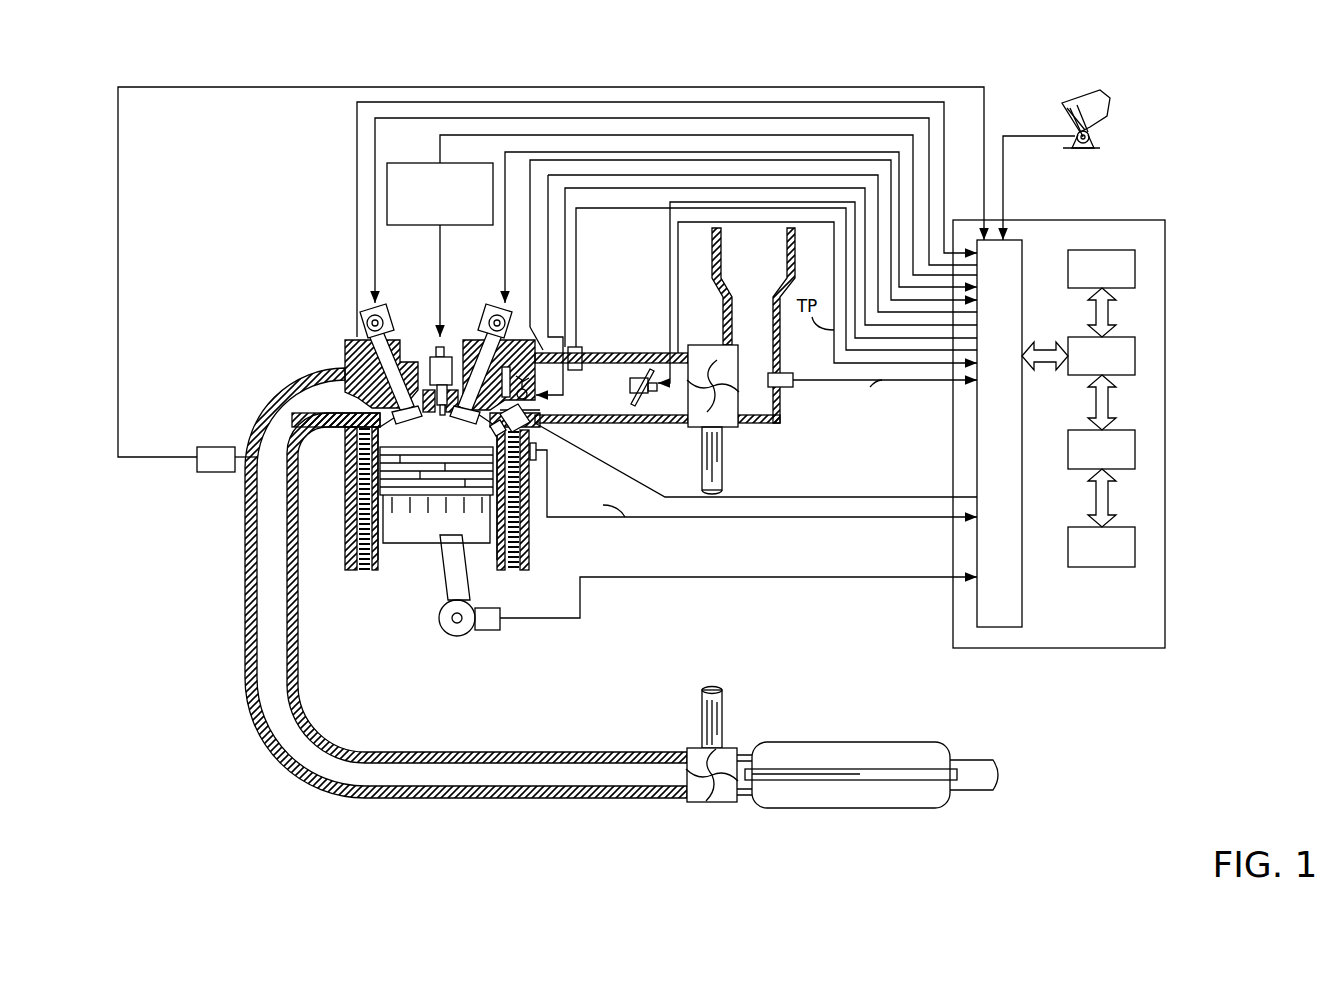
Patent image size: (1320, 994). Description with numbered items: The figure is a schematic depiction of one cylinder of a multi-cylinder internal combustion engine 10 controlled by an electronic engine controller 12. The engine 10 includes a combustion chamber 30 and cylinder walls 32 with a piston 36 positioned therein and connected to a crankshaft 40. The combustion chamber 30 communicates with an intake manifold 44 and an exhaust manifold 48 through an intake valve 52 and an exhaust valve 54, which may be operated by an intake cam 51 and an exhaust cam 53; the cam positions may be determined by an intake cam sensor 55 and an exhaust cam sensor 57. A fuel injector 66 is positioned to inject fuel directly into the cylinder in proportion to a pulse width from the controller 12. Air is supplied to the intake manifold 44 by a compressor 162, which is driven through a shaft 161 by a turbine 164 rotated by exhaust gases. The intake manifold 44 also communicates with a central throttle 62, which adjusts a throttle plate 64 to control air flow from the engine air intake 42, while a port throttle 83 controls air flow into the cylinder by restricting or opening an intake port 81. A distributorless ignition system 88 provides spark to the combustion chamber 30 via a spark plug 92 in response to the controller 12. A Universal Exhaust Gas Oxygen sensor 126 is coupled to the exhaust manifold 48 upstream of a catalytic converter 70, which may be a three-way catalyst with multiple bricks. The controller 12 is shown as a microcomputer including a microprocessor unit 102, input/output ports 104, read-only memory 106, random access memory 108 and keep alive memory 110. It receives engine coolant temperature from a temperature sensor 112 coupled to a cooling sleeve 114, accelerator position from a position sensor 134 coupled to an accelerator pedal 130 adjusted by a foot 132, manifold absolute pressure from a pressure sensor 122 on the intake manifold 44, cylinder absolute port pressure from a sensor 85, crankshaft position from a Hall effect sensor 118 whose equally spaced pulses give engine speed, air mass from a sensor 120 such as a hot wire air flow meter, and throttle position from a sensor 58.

The internal combustion engine 10 is at (285, 292).
The electronic engine controller 12 is at (1102, 419).
The combustion chamber 30 is at (368, 522).
The cylinder walls 32 is at (380, 575).
The piston 36 is at (440, 580).
The crankshaft 40 is at (445, 632).
The engine air intake 42 is at (753, 325).
The intake manifold 44 is at (611, 370).
The exhaust manifold 48 is at (466, 583).
The intake cam 51 is at (498, 318).
The intake valve 52 is at (447, 378).
The exhaust cam 53 is at (383, 318).
The exhaust valve 54 is at (372, 400).
The intake cam sensor 55 is at (503, 318).
The exhaust cam sensor 57 is at (362, 322).
The throttle position sensor 58 is at (648, 400).
The central throttle 62 is at (632, 378).
The throttle plate 64 is at (652, 370).
The fuel injector 66 is at (536, 430).
The catalytic converter 70 is at (762, 806).
The intake port 81 is at (540, 410).
The port throttle 83 is at (529, 393).
The cylinder absolute port pressure sensor 85 is at (512, 368).
The distributorless ignition system 88 is at (395, 163).
The spark plug 92 is at (432, 358).
The microprocessor unit 102 is at (1135, 350).
The input/output ports 104 is at (1025, 245).
The read-only memory 106 is at (1135, 262).
The random access memory 108 is at (1135, 447).
The keep alive memory 110 is at (1135, 545).
The temperature sensor 112 is at (537, 462).
The cooling sleeve 114 is at (520, 538).
The Hall effect sensor 118 is at (484, 632).
The air mass sensor 120 is at (783, 373).
The pressure sensor 122 is at (580, 347).
The Universal Exhaust Gas Oxygen sensor 126 is at (200, 447).
The accelerator pedal 130 is at (1112, 153).
The foot 132 is at (1110, 100).
The position sensor 134 is at (1100, 143).
The shaft 161 is at (722, 440).
The compressor 162 is at (703, 345).
The turbine 164 is at (687, 753).